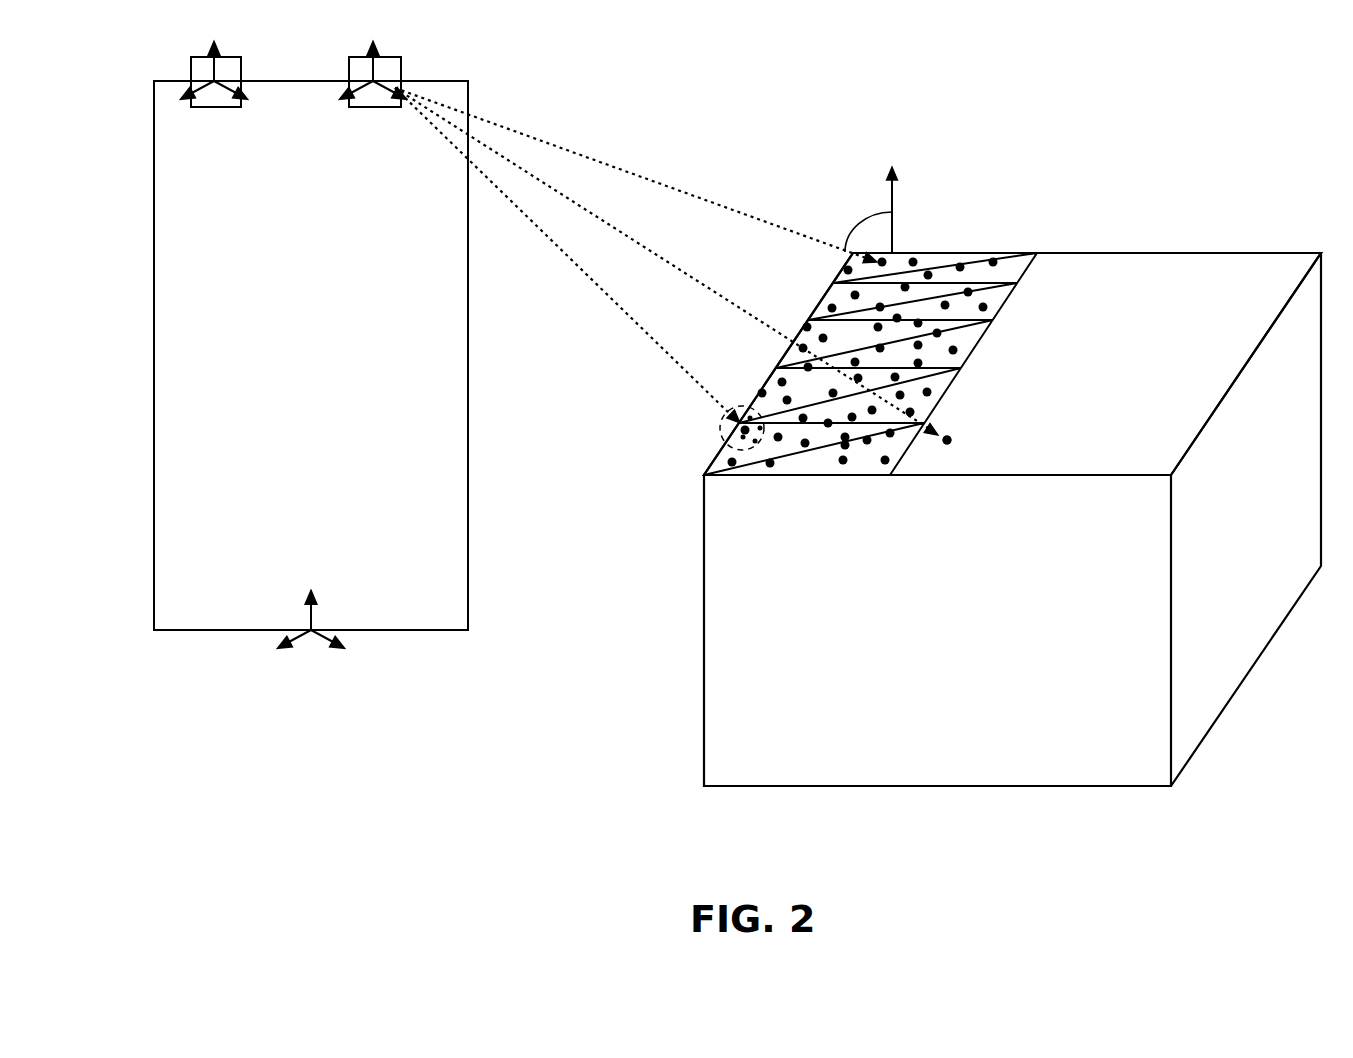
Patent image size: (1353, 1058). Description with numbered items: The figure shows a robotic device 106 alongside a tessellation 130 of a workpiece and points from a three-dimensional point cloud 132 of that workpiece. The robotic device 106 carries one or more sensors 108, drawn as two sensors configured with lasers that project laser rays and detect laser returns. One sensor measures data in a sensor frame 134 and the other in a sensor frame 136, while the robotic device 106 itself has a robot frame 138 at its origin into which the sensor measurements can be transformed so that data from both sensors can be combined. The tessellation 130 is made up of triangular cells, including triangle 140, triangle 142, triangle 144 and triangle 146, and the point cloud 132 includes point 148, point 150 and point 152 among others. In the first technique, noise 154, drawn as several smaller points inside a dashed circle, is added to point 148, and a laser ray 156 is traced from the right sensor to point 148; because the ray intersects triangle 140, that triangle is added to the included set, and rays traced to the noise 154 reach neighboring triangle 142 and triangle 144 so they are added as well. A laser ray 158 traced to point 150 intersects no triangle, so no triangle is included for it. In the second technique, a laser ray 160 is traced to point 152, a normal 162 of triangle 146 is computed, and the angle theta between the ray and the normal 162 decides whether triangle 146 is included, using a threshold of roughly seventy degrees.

The robotic device 106 is at (328, 370).
The one or more sensors 108 is at (232, 62).
The tessellation 130 is at (985, 186).
The 3D point cloud 132 is at (1008, 355).
The sensor frame 134 is at (214, 74).
The sensor frame 136 is at (372, 85).
The robot frame 138 is at (308, 629).
The triangle 140 is at (788, 447).
The triangle 142 is at (818, 410).
The triangle 144 is at (803, 392).
The triangle 146 is at (938, 262).
The point 148 is at (741, 420).
The point 150 is at (945, 445).
The point 152 is at (835, 291).
The noise 154 is at (718, 428).
The laser ray 156 is at (607, 300).
The laser ray 158 is at (722, 300).
The laser ray 160 is at (587, 157).
The normal 162 is at (892, 227).